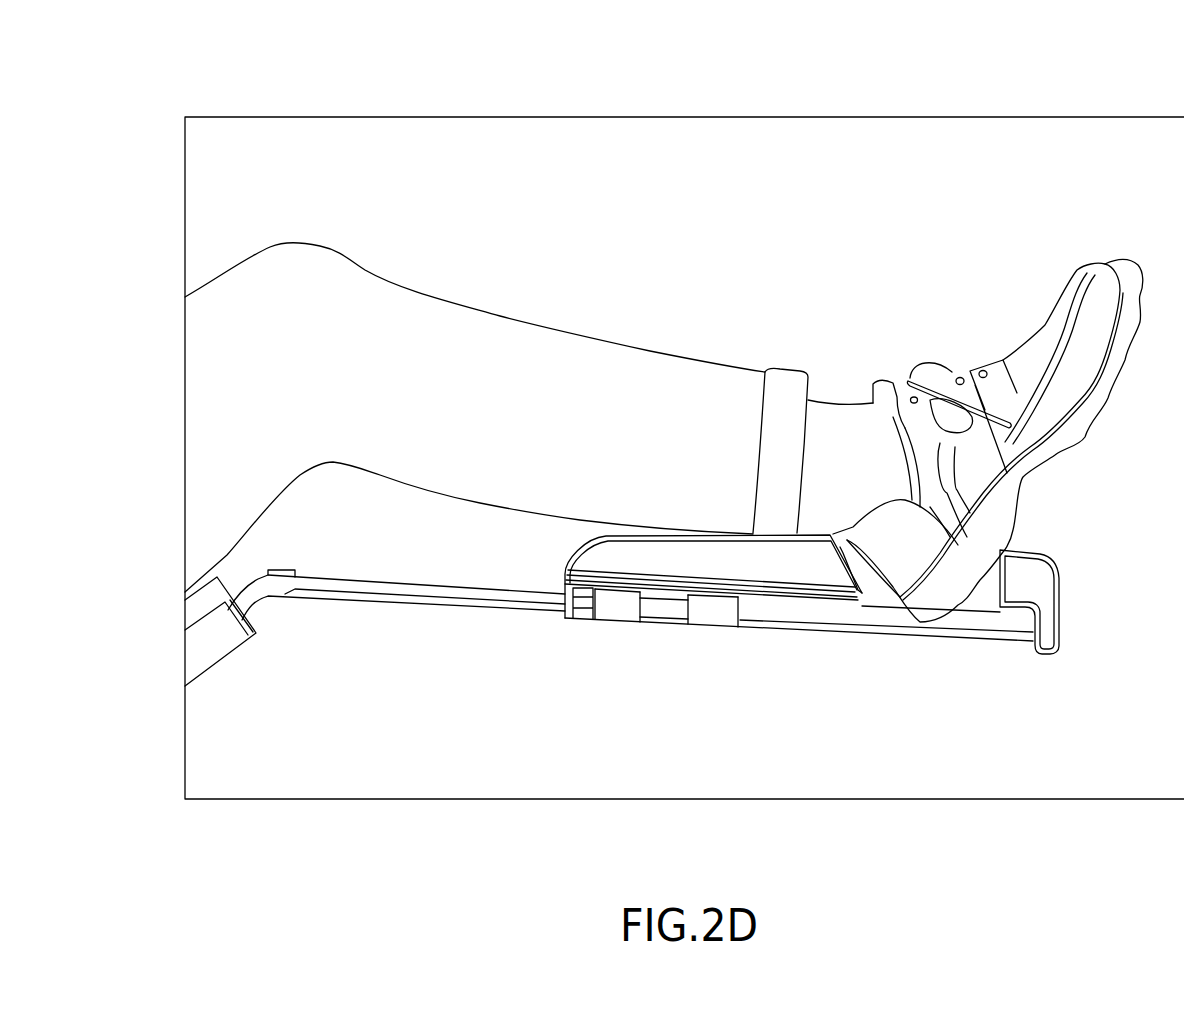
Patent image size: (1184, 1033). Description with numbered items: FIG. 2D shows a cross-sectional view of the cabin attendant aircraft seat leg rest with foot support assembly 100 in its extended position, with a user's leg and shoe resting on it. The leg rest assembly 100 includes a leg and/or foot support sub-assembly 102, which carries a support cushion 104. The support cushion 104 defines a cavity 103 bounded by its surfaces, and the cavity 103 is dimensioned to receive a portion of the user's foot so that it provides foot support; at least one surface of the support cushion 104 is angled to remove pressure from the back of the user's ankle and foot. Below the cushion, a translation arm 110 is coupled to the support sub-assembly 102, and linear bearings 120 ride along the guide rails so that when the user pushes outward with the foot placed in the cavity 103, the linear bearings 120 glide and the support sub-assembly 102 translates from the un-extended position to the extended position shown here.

The leg rest with foot support assembly 100 is at (93, 51).
The leg and/or foot support sub-assembly 102 is at (852, 327).
The cavity 103 is at (874, 584).
The support cushion 104 is at (808, 567).
The translation arm 110 is at (428, 592).
The linear bearing 120 is at (713, 613).